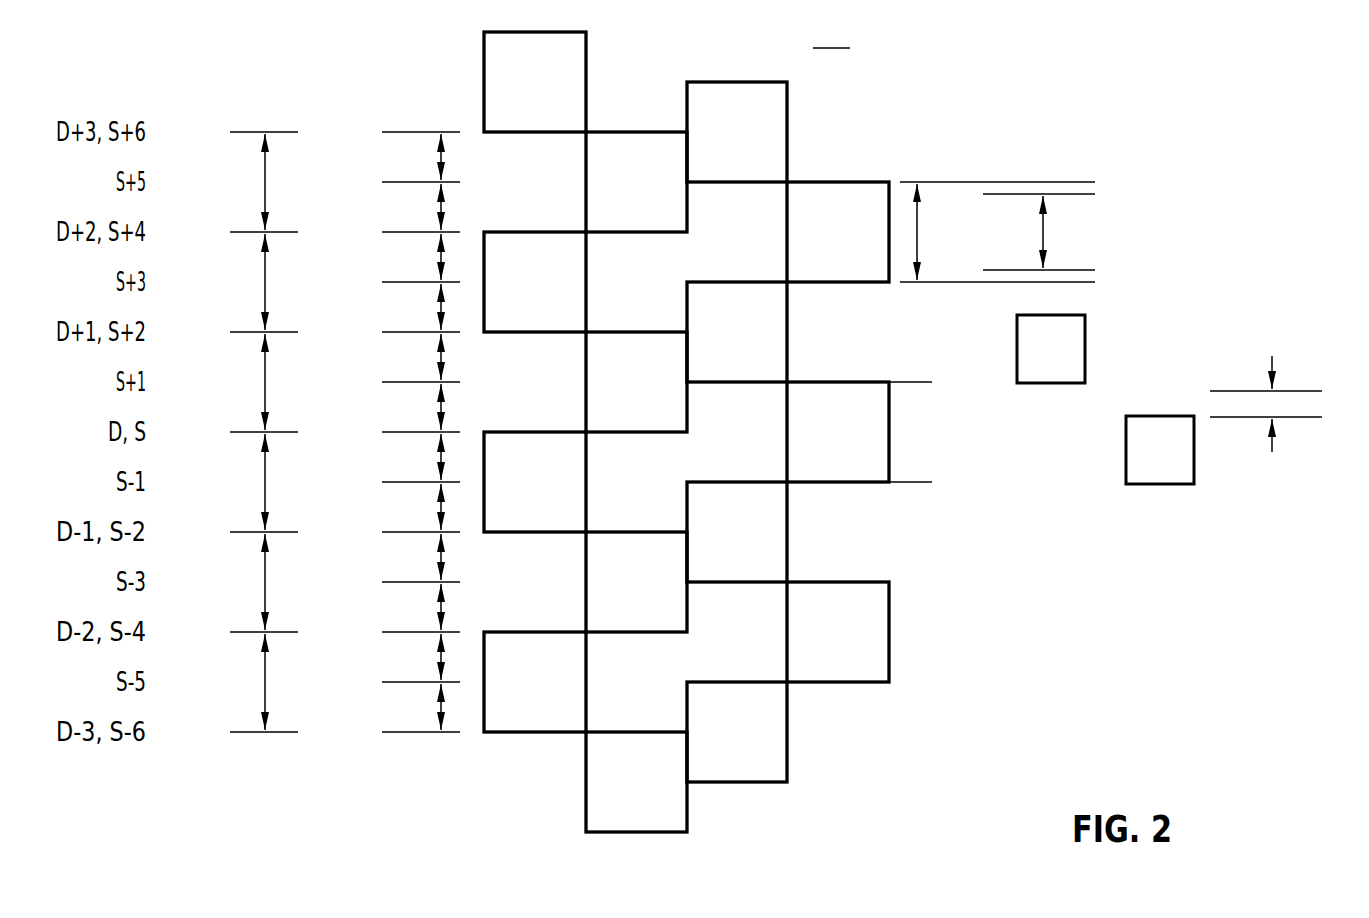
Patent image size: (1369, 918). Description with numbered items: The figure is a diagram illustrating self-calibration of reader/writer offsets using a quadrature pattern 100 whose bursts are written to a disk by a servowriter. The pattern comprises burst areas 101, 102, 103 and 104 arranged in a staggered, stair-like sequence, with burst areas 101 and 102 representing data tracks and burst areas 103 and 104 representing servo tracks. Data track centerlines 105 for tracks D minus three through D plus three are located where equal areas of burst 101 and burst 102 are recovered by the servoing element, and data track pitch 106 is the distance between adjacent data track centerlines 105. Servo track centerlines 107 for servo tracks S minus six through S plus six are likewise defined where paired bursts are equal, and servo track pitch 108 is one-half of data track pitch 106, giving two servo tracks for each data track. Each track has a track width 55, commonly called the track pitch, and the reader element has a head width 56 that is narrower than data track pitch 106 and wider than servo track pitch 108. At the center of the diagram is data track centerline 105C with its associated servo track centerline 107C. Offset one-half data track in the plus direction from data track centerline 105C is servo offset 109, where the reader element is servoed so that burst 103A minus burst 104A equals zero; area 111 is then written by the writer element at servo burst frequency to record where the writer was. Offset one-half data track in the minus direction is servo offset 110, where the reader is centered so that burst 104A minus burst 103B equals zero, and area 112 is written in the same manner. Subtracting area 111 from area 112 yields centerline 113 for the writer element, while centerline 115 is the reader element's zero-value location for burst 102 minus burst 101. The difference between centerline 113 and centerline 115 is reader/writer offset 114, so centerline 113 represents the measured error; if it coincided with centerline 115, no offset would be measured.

The quadrature pattern 100 is at (831, 32).
The burst area 101 is at (535, 382).
The burst area 102 is at (636, 482).
The burst area 103 is at (737, 432).
The burst area 103A is at (737, 332).
The burst area 103B is at (737, 532).
The burst area 104 is at (838, 432).
The burst area 104A is at (838, 432).
The data track centerline 105 is at (237, 432).
The data track centerline 105C is at (237, 432).
The data track pitch 106 is at (242, 432).
The servo track centerline 107 is at (399, 432).
The servo track centerline 107C is at (399, 432).
The servo track pitch 108 is at (419, 432).
The servo offset 109 is at (929, 382).
The servo offset 110 is at (929, 482).
The area 111 is at (1051, 349).
The area 112 is at (1160, 450).
The centerline 113 is at (1284, 388).
The reader/writer offset 114 is at (1271, 404).
The centerline 115 is at (1284, 422).
The track width 55 is at (997, 232).
The head width 56 is at (1039, 232).